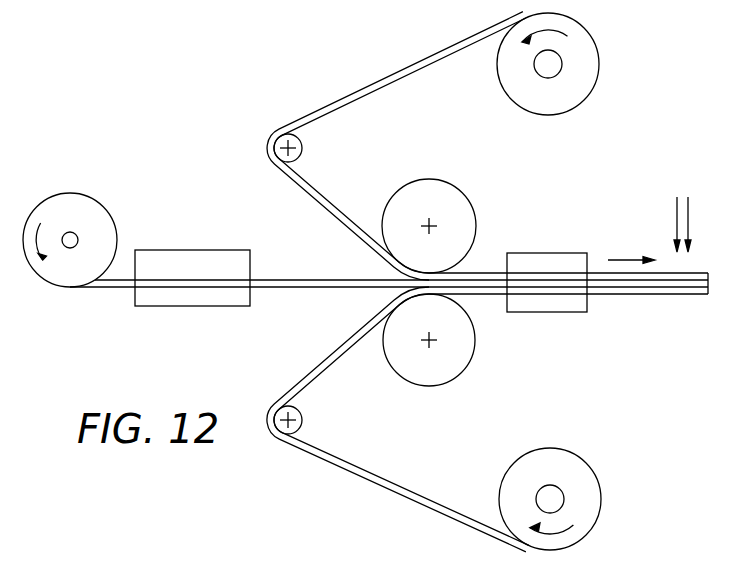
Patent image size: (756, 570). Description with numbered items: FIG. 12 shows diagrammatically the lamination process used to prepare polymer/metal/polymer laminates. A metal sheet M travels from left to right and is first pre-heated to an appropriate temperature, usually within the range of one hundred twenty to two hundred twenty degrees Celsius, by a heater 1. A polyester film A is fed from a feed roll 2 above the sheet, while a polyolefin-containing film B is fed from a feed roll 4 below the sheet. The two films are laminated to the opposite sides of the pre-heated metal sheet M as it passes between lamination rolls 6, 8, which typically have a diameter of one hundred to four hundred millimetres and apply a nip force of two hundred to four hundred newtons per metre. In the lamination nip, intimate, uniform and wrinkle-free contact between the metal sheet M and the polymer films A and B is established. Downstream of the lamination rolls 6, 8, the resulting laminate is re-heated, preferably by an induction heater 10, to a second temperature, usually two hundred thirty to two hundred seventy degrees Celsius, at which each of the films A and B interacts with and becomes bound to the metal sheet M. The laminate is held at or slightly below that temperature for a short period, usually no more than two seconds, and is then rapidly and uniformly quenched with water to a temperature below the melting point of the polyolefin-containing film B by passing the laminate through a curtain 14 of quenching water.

The metal sheet M is at (108, 286).
The heater 1 is at (185, 303).
The feed roll 2 is at (594, 68).
The polyester film A is at (412, 72).
The lamination roll 6 is at (458, 200).
The lamination roll 8 is at (436, 383).
The polyolefin-containing film B is at (385, 487).
The feed roll 4 is at (592, 479).
The induction heater 10 is at (555, 306).
The curtain of quenching water 14 is at (676, 211).